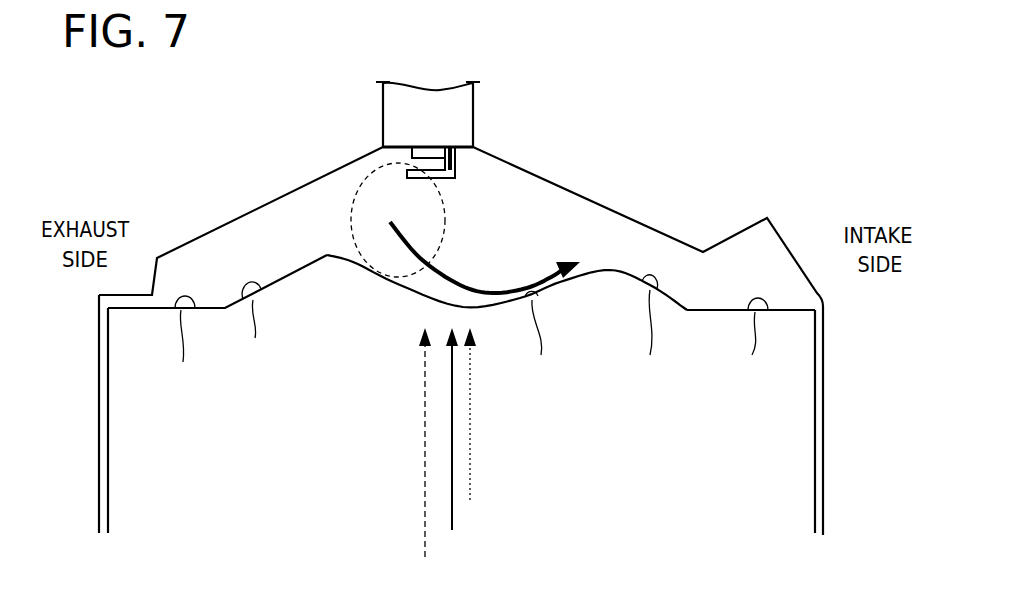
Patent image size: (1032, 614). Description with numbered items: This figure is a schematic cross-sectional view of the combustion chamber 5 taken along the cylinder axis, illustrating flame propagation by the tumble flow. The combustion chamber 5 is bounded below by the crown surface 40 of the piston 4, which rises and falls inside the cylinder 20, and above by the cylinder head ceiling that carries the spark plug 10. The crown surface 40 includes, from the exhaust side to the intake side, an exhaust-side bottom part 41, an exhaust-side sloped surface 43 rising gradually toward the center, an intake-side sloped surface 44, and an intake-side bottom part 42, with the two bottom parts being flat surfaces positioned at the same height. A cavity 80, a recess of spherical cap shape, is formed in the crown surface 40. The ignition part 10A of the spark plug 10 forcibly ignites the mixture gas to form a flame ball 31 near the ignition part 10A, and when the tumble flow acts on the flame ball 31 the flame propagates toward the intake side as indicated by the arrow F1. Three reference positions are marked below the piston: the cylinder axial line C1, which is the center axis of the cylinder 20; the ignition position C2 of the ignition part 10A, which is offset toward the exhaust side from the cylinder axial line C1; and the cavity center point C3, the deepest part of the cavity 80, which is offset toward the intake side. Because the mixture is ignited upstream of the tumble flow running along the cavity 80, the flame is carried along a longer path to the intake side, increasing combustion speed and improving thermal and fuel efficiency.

The piston 4 is at (788, 410).
The combustion chamber 5 is at (553, 201).
The spark plug 10 is at (475, 100).
The ignition part 10A is at (380, 151).
The cylinder 20 is at (826, 350).
The flame ball 31 is at (357, 268).
The crown surface 40 is at (302, 243).
The exhaust-side bottom part 41 is at (182, 344).
The intake-side bottom part 42 is at (751, 339).
The exhaust-side sloped surface 43 is at (254, 322).
The intake-side sloped surface 44 is at (647, 328).
The cavity 80 is at (541, 336).
The arrow indicating flame propagation F1 is at (483, 287).
The cylinder axial line C1 is at (452, 444).
The ignition position C2 is at (425, 457).
The cavity center point C3 is at (477, 429).